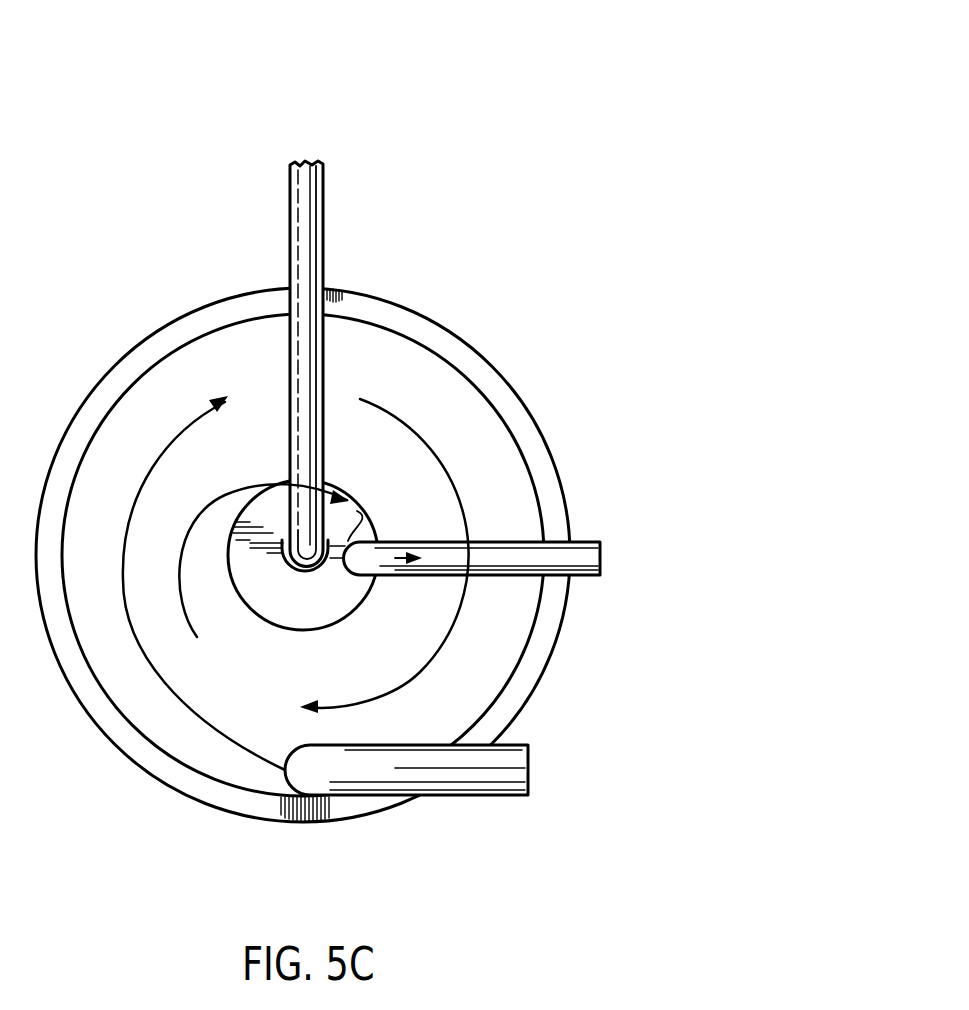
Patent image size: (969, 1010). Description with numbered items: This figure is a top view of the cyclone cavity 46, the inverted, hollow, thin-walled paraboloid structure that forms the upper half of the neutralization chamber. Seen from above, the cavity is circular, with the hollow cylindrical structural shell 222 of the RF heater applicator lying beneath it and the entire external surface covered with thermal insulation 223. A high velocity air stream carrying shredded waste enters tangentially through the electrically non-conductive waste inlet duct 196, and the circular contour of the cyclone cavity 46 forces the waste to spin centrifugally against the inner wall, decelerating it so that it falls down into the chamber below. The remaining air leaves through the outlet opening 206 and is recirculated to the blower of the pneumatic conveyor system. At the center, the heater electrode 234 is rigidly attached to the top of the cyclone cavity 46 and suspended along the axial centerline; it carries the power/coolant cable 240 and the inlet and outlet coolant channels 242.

The cyclone cavity 46 is at (547, 112).
The waste inlet duct 196 is at (517, 757).
The outlet opening 206 is at (590, 545).
The structural shell 222 is at (362, 494).
The thermal insulation 223 is at (434, 336).
The heater electrode 234 is at (283, 557).
The power/coolant cable 240 is at (300, 225).
The inlet and outlet coolant channels 242 is at (307, 282).